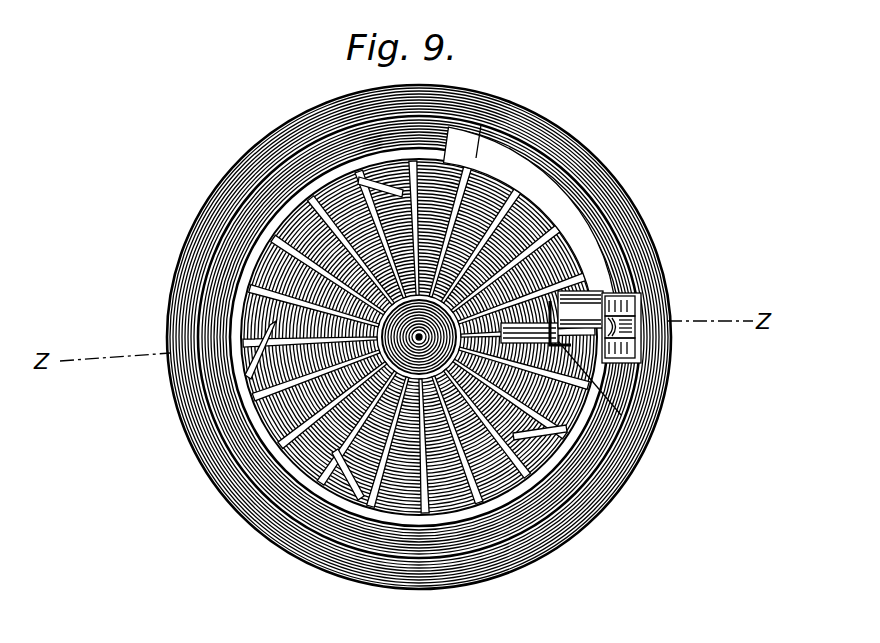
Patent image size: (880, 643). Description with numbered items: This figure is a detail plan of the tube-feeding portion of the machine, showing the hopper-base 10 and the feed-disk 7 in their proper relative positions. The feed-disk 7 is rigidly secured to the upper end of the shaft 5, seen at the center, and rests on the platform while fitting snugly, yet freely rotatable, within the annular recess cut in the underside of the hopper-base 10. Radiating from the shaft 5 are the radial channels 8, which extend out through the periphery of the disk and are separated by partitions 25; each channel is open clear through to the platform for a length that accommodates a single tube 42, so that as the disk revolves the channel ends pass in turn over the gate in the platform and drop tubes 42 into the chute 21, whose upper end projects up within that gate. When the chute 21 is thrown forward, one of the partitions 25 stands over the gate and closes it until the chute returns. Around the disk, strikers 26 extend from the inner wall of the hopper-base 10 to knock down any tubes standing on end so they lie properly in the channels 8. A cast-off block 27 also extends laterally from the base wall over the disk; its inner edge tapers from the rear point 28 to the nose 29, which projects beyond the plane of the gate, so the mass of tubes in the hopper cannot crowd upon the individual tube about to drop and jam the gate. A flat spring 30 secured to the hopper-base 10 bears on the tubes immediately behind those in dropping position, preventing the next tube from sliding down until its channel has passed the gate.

The shaft 5 is at (306, 389).
The feed-disk 7 is at (408, 226).
The radial channels 8 is at (374, 389).
The hopper-base 10 is at (435, 337).
The chute 21 is at (654, 308).
The partitions 25 is at (657, 307).
The strikers 26 is at (401, 330).
The cast-off block 27 is at (552, 317).
The rear point 28 is at (487, 114).
The nose 29 is at (626, 382).
The flat spring 30 is at (622, 372).
The tubes 42 is at (681, 328).